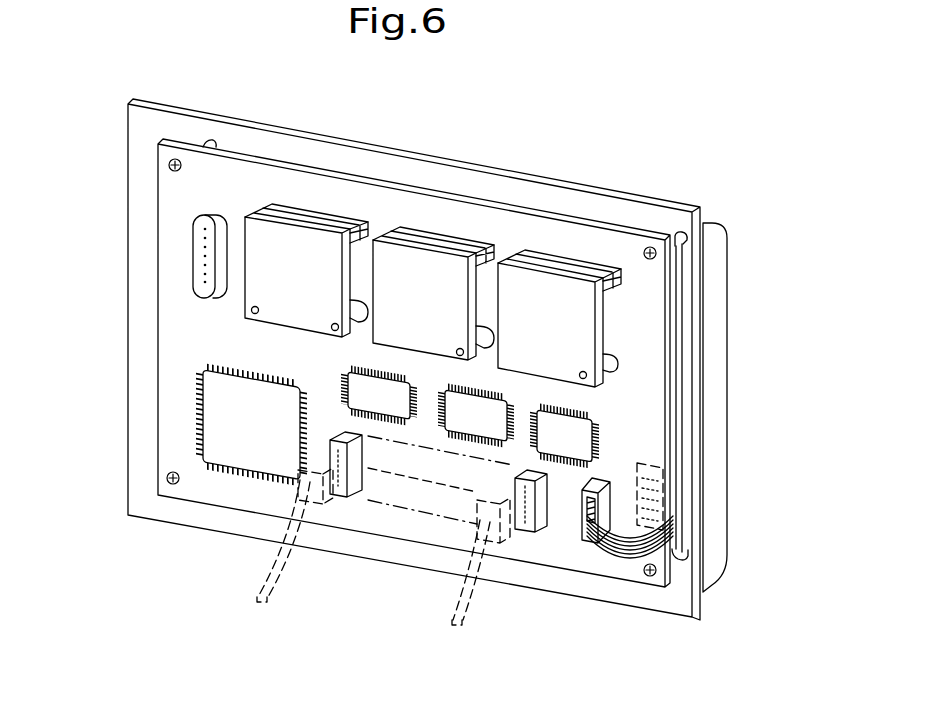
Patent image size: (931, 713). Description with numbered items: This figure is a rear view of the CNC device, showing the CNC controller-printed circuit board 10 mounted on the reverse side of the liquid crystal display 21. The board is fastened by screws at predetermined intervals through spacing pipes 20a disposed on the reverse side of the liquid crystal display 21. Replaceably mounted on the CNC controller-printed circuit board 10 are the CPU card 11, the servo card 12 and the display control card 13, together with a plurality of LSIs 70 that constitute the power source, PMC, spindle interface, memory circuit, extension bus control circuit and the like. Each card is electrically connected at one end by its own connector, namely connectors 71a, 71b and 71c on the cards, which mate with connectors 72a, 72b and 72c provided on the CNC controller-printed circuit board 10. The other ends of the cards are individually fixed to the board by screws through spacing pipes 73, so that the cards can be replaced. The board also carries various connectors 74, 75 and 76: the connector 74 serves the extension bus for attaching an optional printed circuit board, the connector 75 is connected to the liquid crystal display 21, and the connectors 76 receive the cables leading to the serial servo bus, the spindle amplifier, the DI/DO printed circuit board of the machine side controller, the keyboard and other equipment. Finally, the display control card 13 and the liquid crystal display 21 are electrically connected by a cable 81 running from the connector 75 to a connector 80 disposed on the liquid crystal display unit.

The CNC controller-printed circuit board 10 is at (580, 233).
The CPU card 11 is at (321, 204).
The servo card 12 is at (453, 228).
The display control card 13 is at (601, 260).
The spacing pipe 20a is at (210, 144).
The liquid crystal display 21 is at (720, 218).
The LSI 70 is at (478, 412).
The connector 71a is at (352, 226).
The connector 71b is at (487, 244).
The connector 71c is at (616, 268).
The connector 72a is at (362, 236).
The connector 72b is at (502, 250).
The connector 72c is at (622, 278).
The spacing pipe 73 is at (350, 302).
The connector 74 is at (195, 258).
The connector 75 is at (578, 508).
The connector 76 is at (357, 497).
The connector 80 is at (665, 460).
The cable 81 is at (623, 555).